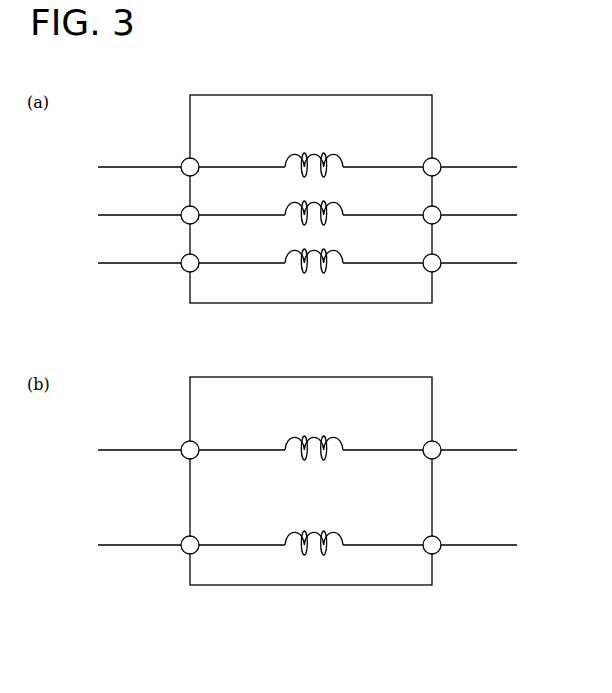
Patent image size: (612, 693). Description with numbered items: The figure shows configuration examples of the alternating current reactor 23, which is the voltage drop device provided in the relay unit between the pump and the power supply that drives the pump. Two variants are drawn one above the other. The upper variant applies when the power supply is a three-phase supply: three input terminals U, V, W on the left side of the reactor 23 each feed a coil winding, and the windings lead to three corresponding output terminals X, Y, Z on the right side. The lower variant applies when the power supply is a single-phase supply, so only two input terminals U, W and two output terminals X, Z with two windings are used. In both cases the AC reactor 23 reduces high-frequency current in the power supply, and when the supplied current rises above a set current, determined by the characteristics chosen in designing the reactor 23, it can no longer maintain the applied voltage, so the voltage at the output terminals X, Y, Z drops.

The alternating current (AC) reactor 23 is at (296, 612).
The U-phase input terminal U is at (148, 297).
The V-phase input terminal V is at (148, 203).
The W-phase input terminal W is at (148, 392).
The X-phase output terminal X is at (470, 297).
The Y-phase output terminal Y is at (470, 203).
The Z-phase output terminal Z is at (470, 392).